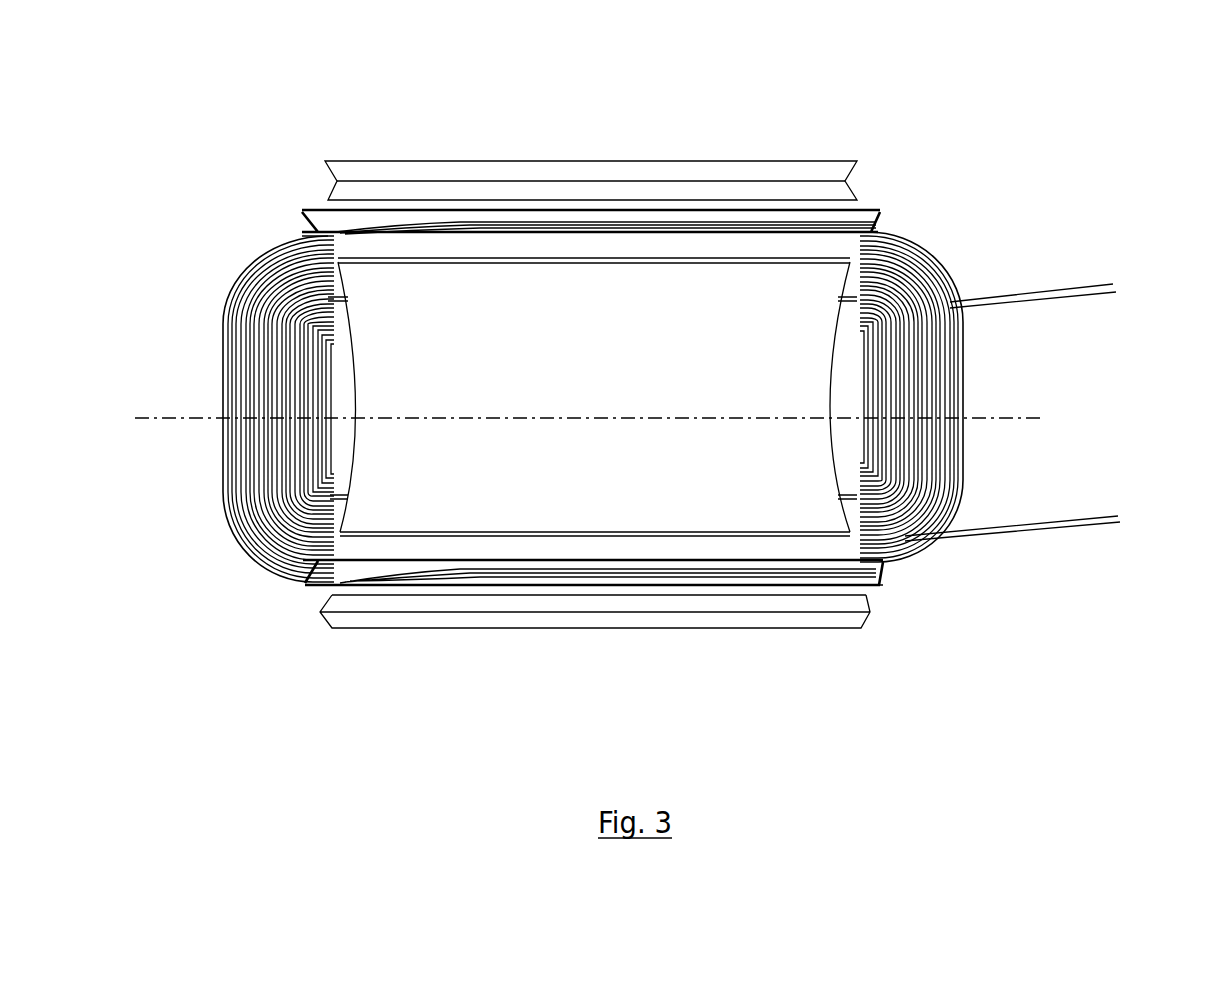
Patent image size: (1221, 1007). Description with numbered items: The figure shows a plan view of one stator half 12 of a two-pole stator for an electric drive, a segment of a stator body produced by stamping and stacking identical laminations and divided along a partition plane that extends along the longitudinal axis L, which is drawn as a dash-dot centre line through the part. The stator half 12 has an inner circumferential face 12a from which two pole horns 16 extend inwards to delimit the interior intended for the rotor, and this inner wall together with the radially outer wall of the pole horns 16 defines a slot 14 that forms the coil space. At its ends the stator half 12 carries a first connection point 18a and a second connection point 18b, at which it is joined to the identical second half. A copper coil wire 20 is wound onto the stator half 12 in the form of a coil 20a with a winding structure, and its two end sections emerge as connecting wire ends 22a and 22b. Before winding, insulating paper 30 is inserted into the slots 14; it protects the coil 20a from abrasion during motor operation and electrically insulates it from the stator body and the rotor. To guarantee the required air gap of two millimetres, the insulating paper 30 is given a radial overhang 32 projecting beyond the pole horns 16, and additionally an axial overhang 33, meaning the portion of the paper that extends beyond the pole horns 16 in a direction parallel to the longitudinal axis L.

The stator half 12 is at (962, 168).
The inner circumferential face 12a is at (470, 590).
The slot 14 is at (714, 600).
The pole horn 16 is at (612, 379).
The first connection point 18a is at (603, 173).
The second connection point 18b is at (600, 610).
The coil wire 20 is at (222, 368).
The coil 20a is at (218, 289).
The wire end 22a is at (1043, 297).
The wire end 22b is at (1048, 525).
The insulating paper 30 is at (889, 221).
The radial overhang 32 is at (792, 245).
The axial overhang 33 is at (308, 232).
The longitudinal axis L is at (985, 415).